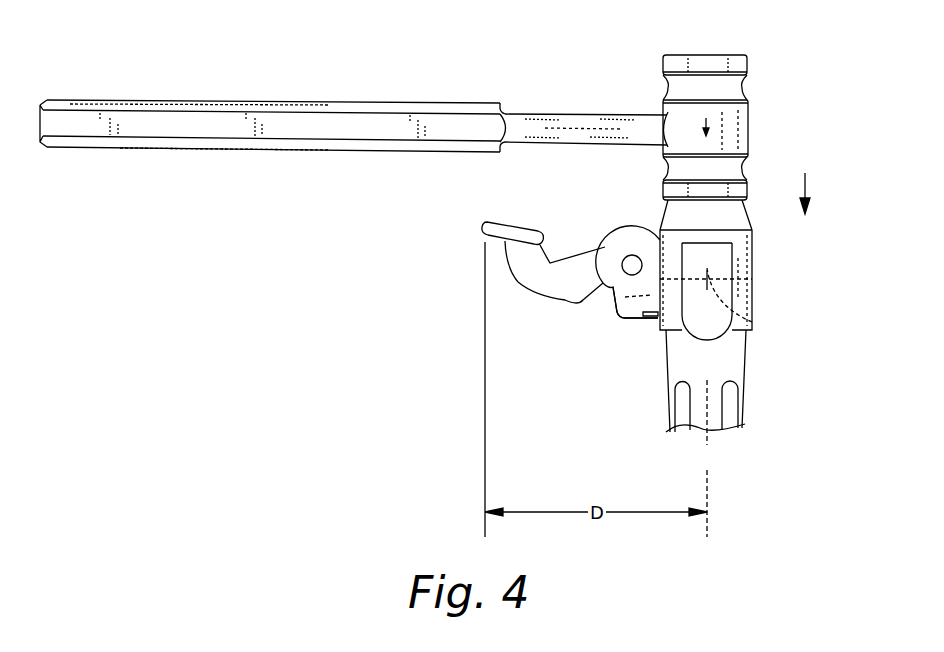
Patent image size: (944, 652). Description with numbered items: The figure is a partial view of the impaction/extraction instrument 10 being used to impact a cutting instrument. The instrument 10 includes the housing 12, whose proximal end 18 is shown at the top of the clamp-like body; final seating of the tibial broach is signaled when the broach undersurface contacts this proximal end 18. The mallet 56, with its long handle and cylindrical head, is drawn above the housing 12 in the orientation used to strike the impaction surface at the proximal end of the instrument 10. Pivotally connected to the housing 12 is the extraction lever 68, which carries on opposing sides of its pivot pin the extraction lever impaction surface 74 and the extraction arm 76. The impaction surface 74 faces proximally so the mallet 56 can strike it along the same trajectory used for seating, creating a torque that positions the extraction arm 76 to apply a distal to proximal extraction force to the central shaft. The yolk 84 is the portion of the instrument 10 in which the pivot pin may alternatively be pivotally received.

The mallet 56 is at (430, 70).
The proximal end 18 is at (754, 232).
The impaction/extraction instrument 10 is at (771, 282).
The extraction arm 76 is at (752, 322).
The housing 12 is at (683, 368).
The extraction lever 68 is at (528, 275).
The extraction lever impaction surface 74 is at (523, 220).
The yolk 84 is at (613, 295).